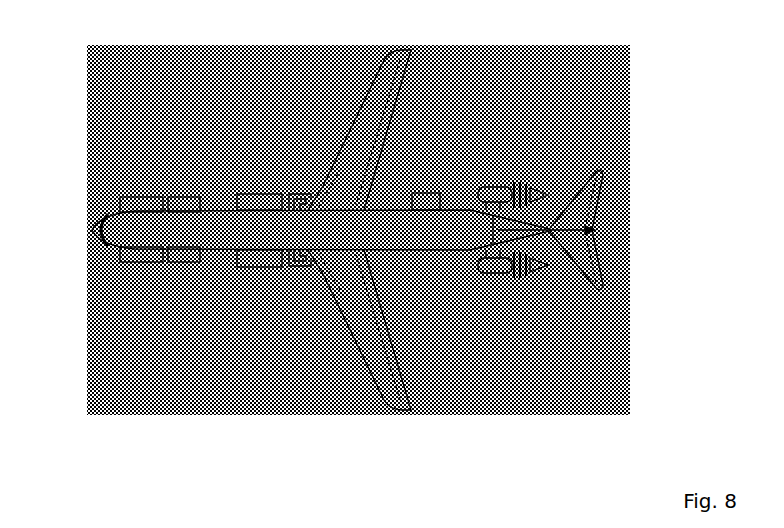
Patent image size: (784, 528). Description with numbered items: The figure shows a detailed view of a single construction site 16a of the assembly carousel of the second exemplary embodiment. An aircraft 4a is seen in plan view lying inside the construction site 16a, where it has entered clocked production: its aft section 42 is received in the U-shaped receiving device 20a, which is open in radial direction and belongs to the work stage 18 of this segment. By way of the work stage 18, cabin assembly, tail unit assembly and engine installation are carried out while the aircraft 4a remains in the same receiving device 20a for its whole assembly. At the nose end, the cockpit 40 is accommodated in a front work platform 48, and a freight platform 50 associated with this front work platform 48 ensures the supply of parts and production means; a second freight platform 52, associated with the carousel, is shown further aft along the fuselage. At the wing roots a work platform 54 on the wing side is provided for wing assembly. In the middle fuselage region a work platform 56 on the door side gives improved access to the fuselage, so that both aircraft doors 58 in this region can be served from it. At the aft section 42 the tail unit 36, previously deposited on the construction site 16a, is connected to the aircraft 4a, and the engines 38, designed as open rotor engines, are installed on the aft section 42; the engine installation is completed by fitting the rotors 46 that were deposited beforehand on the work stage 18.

The aircraft 4a is at (94, 93).
The cockpit 40 is at (128, 197).
The freight platform 50 is at (183, 197).
The work platform on the door side 56 is at (262, 194).
The work platform on the wing side 54 is at (300, 193).
The freight platform 52 is at (428, 193).
The aft section 42 is at (493, 222).
The tail unit 36 is at (575, 190).
The front work platform 48 is at (130, 262).
The aircraft doors 58 is at (273, 267).
The construction site 16a is at (320, 370).
The receiving device 20a is at (447, 257).
The engines 38 is at (498, 273).
The rotors 46 is at (532, 293).
The work stage 18 is at (590, 375).